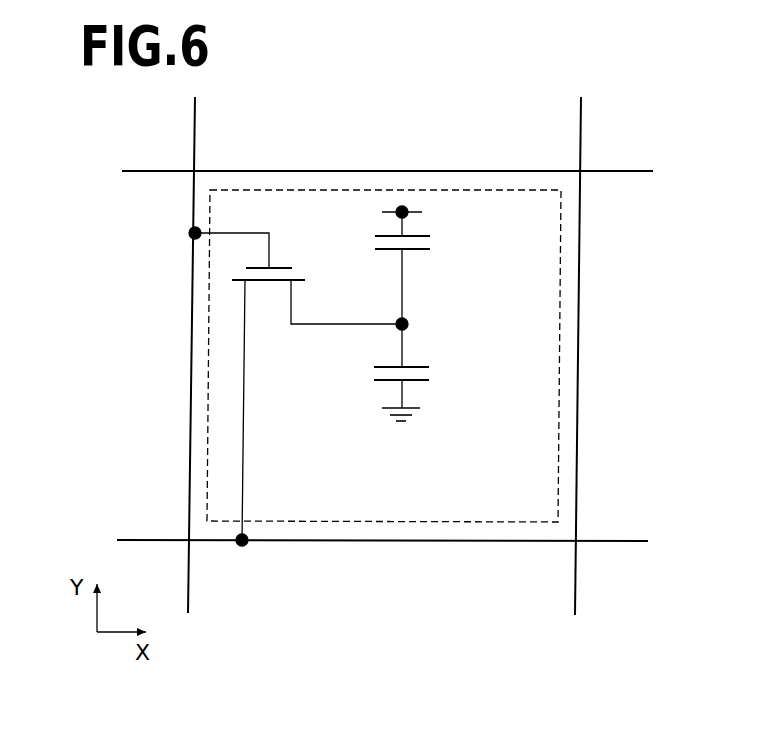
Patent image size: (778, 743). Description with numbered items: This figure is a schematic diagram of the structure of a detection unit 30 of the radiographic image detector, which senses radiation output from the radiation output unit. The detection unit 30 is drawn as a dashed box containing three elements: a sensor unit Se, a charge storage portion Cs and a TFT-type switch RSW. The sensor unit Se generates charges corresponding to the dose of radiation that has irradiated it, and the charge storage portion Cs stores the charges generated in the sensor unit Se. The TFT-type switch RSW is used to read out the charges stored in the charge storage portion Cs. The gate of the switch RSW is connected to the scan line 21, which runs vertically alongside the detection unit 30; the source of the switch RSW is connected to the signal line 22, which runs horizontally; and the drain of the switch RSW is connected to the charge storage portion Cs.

The scan line 21 is at (196, 126).
The signal line 22 is at (615, 173).
The detection unit 30 is at (489, 190).
The TFT-type switch RSW is at (264, 292).
The sensor unit Se is at (435, 240).
The charge storage portion Cs is at (435, 372).